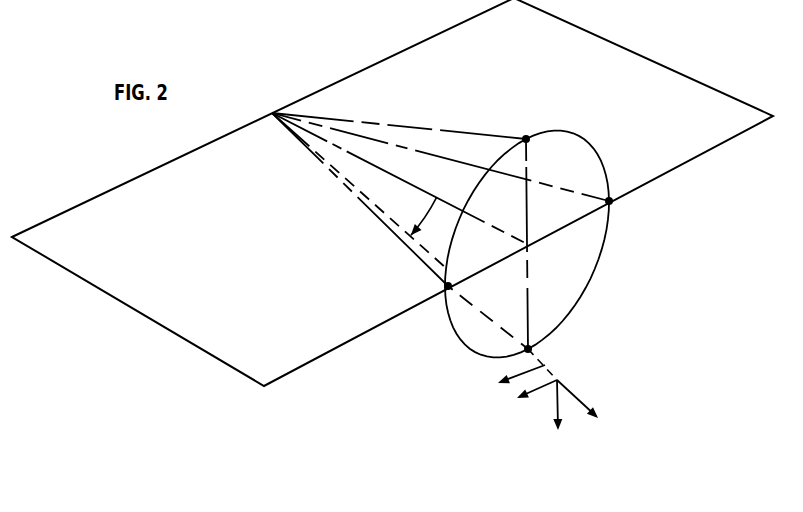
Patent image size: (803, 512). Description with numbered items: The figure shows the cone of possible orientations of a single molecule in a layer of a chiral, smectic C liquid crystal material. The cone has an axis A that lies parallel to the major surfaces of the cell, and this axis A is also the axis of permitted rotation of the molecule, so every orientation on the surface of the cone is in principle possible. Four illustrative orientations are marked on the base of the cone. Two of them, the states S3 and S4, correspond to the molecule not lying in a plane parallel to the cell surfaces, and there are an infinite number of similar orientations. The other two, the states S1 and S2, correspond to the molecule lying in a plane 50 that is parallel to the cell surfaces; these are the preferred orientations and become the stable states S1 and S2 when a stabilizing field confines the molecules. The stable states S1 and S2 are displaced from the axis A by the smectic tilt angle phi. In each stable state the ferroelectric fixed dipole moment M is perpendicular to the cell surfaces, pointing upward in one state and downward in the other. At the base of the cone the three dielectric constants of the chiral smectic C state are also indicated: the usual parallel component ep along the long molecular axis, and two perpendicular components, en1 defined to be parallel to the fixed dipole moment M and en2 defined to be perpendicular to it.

The plane 50 is at (181, 334).
The stable state S1 is at (581, 191).
The stable state S2 is at (393, 235).
The illustrative state S3 is at (486, 132).
The illustrative state S4 is at (506, 333).
The axis A is at (481, 223).
The smectic tilt angle phi is at (422, 216).
The fixed dipole moment M is at (514, 380).
The parallel dielectric constant component ep is at (587, 413).
The first perpendicular dielectric constant component en1 is at (528, 402).
The second perpendicular dielectric constant component en2 is at (553, 407).